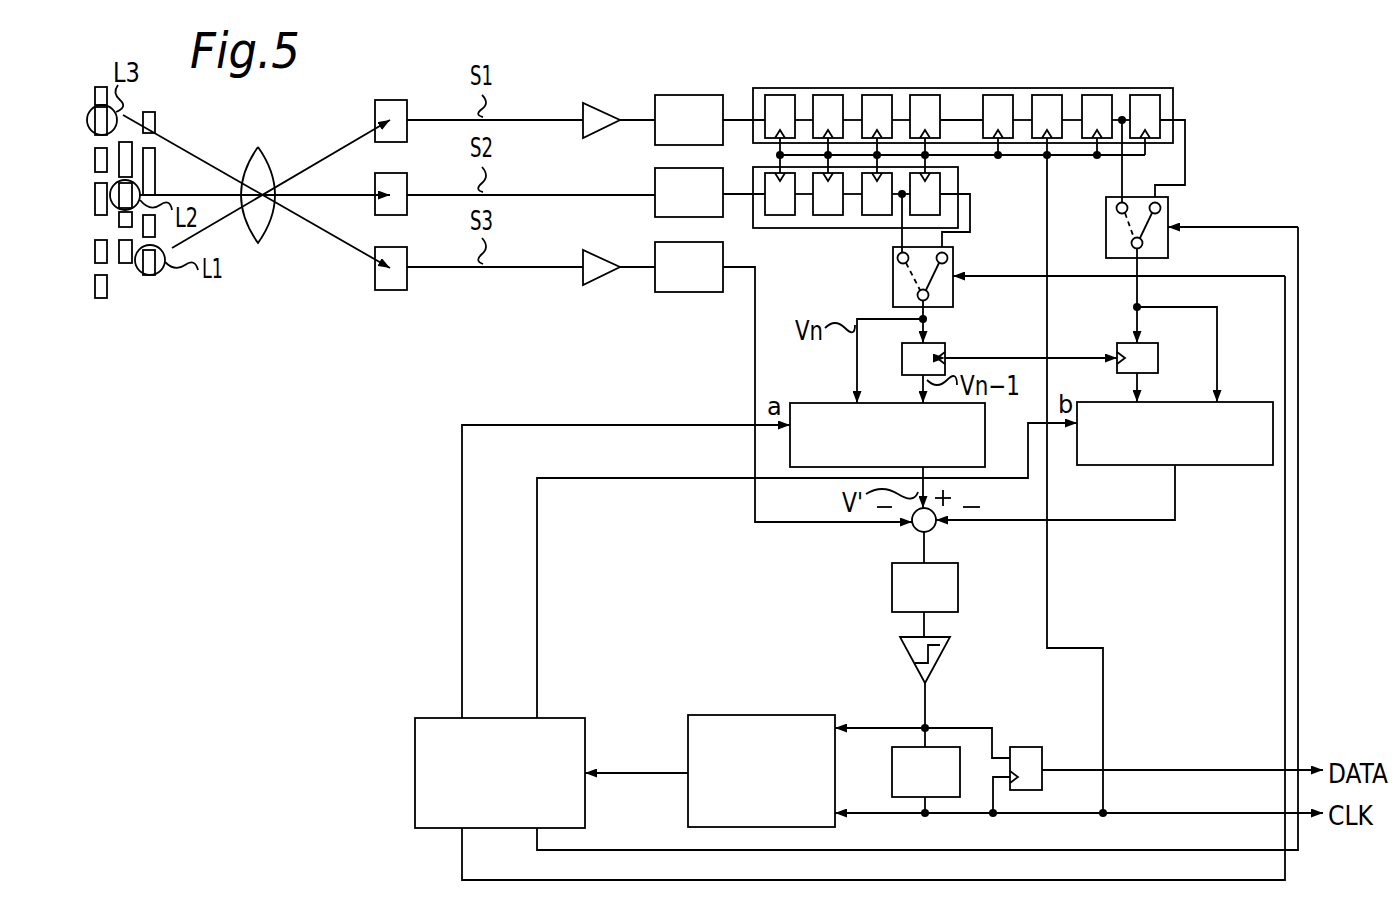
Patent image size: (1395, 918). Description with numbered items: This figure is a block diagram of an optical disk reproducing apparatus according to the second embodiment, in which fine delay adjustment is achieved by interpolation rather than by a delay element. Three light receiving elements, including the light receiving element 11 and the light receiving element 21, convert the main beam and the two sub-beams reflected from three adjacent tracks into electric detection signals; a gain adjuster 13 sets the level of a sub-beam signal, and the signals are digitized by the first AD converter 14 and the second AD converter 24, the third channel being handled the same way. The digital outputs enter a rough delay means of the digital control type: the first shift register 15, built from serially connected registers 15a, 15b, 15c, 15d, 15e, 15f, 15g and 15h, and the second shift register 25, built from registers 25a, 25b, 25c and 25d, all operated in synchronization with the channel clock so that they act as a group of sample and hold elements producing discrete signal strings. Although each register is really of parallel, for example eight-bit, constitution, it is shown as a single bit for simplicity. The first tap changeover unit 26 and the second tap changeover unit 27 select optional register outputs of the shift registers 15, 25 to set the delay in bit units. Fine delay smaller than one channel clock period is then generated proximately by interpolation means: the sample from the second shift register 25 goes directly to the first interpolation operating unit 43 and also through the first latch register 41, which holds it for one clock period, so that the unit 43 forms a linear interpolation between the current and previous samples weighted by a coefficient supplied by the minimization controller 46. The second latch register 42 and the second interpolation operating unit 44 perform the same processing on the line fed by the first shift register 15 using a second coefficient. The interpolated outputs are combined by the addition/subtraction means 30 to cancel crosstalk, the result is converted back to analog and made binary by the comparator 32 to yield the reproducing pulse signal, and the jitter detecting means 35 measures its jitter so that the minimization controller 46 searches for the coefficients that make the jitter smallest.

The light receiving element 11 is at (385, 100).
The light receiving element 21 is at (408, 180).
The gain adjuster 13 is at (595, 103).
The first AD converter 14 is at (687, 95).
The second AD converter 24 is at (655, 177).
The first shift register 15 is at (1185, 130).
The register 15a is at (780, 95).
The register 15b is at (826, 95).
The register 15c is at (877, 95).
The register 15d is at (925, 95).
The register 15e is at (998, 95).
The register 15f is at (1047, 95).
The register 15g is at (1097, 95).
The register 15h is at (1145, 95).
The second shift register 25 is at (958, 213).
The register 25a is at (765, 215).
The register 25b is at (813, 215).
The register 25c is at (862, 215).
The register 25d is at (942, 182).
The first tap changeover unit 26 is at (1170, 203).
The second tap changeover unit 27 is at (953, 262).
The first latch register 41 is at (945, 343).
The second latch register 42 is at (1117, 343).
The first interpolation operating unit 43 is at (798, 403).
The second interpolation operating unit 44 is at (1240, 465).
The addition/subtraction means 30 is at (913, 535).
The comparator 32 is at (938, 667).
The jitter detecting means 35 is at (760, 715).
The minimization controller 46 is at (557, 718).